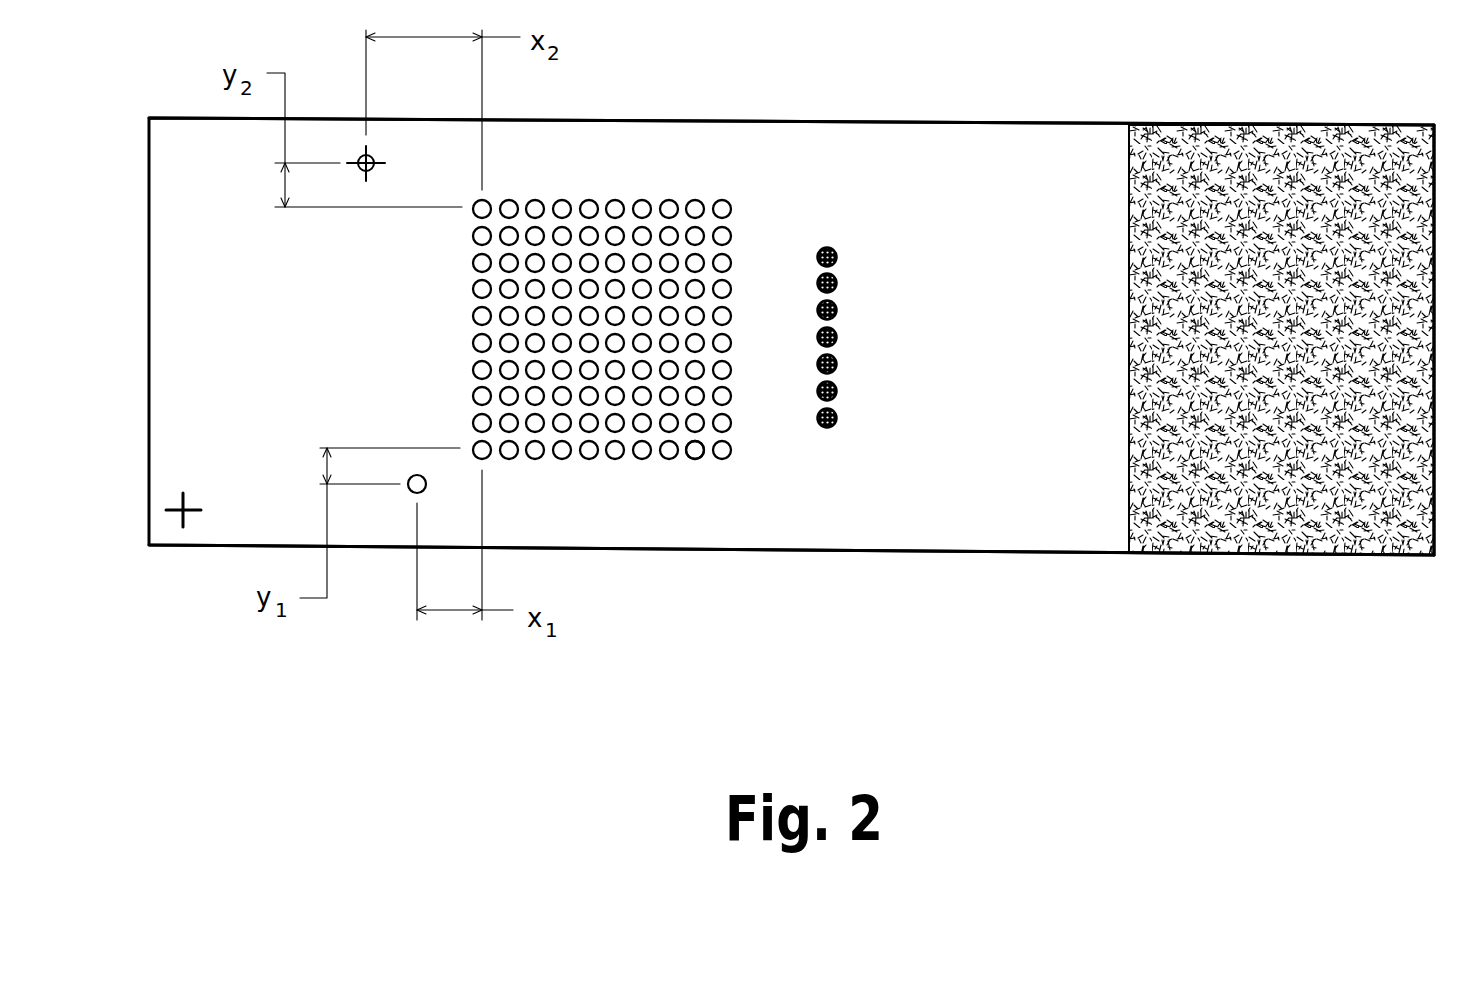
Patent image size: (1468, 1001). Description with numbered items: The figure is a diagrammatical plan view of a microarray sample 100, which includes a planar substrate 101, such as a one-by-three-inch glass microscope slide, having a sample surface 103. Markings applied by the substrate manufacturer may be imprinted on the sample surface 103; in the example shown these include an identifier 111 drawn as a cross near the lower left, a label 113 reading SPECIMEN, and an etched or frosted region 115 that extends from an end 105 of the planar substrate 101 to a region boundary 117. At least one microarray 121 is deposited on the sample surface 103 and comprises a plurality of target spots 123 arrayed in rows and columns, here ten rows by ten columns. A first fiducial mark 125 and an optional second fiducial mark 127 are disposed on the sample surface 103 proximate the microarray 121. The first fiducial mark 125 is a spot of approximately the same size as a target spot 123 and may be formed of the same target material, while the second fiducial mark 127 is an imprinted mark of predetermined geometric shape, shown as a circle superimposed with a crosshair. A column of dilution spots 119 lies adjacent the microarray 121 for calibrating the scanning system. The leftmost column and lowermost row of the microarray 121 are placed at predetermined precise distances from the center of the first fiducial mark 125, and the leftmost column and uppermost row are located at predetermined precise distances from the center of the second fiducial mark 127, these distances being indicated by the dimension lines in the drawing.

The microarray sample 100 is at (832, 708).
The planar substrate 101 is at (874, 120).
The sample surface 103 is at (843, 533).
The end of the planar substrate 105 is at (1437, 538).
The identifier 111 is at (187, 505).
The label 113 is at (1050, 533).
The frosted region 115 is at (1218, 140).
The region boundary 117 is at (1127, 140).
The dilution spots 119 is at (840, 221).
The microarray 121 is at (630, 168).
The target spot 123 is at (700, 458).
The first fiducial mark 125 is at (417, 474).
The second fiducial mark 127 is at (372, 170).